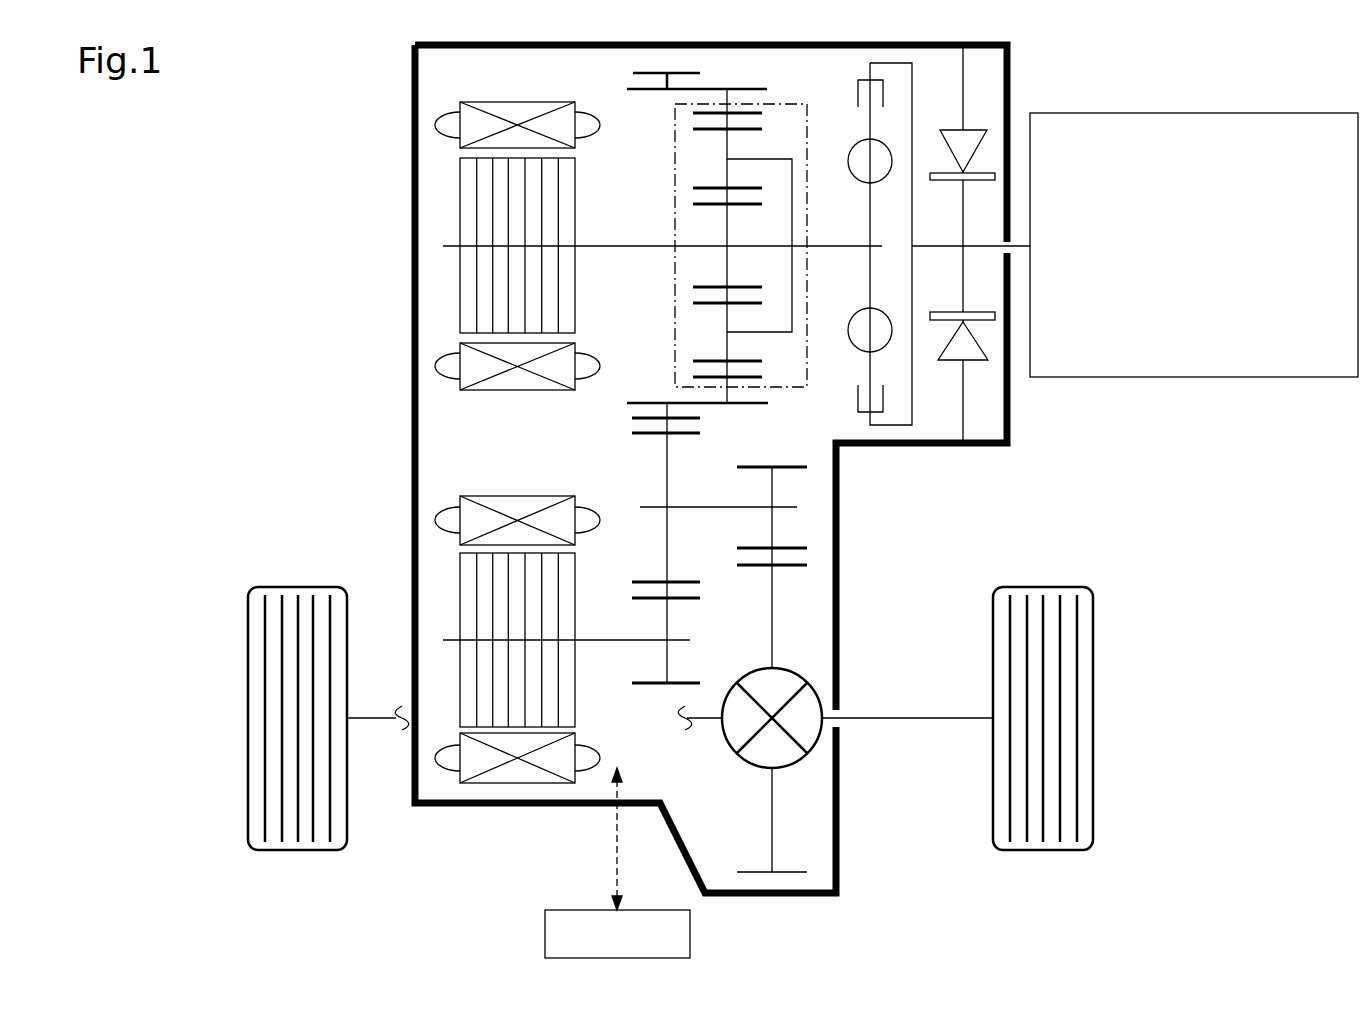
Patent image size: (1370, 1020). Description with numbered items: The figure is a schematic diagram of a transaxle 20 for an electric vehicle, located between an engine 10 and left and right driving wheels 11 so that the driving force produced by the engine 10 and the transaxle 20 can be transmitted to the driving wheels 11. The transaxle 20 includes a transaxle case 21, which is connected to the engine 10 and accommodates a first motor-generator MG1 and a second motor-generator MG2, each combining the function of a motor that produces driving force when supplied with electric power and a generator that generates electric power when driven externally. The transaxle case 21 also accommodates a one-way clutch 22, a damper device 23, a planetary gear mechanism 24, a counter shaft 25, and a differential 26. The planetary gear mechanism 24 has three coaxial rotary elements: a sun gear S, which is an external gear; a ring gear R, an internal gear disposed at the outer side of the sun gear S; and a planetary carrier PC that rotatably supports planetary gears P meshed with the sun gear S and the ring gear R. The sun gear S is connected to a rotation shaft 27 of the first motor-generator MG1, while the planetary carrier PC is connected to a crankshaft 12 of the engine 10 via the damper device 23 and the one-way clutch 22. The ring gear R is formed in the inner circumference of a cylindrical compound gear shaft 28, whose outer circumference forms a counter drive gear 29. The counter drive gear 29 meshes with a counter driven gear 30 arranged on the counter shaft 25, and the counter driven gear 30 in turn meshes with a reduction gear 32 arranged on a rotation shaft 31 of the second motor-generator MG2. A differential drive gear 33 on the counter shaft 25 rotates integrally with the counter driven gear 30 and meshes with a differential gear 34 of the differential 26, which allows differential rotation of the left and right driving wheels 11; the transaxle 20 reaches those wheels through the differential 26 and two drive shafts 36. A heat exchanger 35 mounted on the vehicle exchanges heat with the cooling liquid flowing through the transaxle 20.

The engine 10 is at (1267, 378).
The driving wheels 11 is at (297, 852).
The crankshaft 12 is at (990, 243).
The transaxle 20 is at (383, 120).
The transaxle case 21 is at (840, 530).
The one-way clutch 22 is at (953, 362).
The damper device 23 is at (870, 128).
The planetary gear mechanism 24 is at (706, 225).
The counter shaft 25 is at (718, 508).
The differential 26 is at (753, 752).
The rotation shaft 27 is at (625, 250).
The compound gear shaft 28 is at (647, 93).
The counter drive gear 29 is at (652, 415).
The counter driven gear 30 is at (650, 435).
The rotation shaft 31 is at (595, 642).
The reduction gear 32 is at (648, 685).
The differential drive gear 33 is at (787, 465).
The differential gear 34 is at (748, 568).
The heat exchanger 35 is at (545, 940).
The drive shafts 36 is at (375, 720).
The first motor-generator MG1 is at (492, 390).
The second motor-generator MG2 is at (542, 505).
The ring gear R is at (742, 110).
The sun gear S is at (745, 205).
The planetary gears P is at (710, 187).
The planetary carrier PC is at (767, 158).